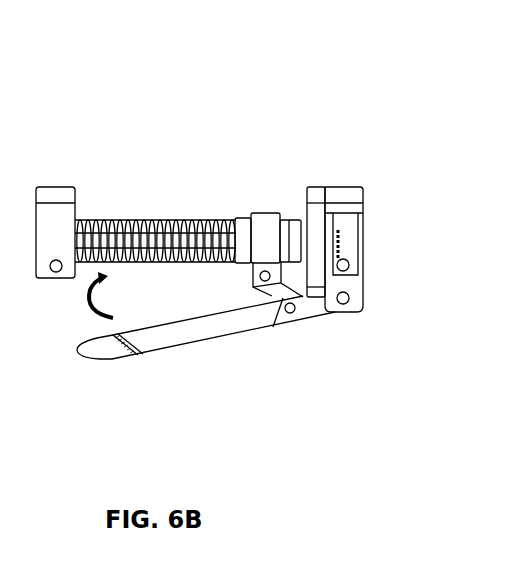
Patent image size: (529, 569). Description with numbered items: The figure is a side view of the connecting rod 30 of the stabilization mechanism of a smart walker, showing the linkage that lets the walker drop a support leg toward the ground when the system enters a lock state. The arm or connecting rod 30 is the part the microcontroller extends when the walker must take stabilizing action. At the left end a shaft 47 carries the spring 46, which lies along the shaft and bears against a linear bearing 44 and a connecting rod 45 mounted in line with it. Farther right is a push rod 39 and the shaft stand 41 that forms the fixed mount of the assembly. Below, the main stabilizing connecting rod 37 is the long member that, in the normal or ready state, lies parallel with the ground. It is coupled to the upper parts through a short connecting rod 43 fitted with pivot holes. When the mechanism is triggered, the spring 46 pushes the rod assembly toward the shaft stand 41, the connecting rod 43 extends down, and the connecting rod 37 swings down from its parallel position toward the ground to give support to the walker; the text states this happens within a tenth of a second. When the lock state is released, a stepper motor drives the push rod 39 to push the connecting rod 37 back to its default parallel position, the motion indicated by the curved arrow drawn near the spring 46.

The connecting rod 30 is at (162, 115).
The main stabilizing connecting rod 37 is at (151, 350).
The push rod 39 is at (314, 186).
The shaft stand 41 is at (357, 239).
The connecting rod 43 is at (279, 302).
The linear bearing 44 is at (288, 216).
The connecting rod 45 is at (251, 210).
The spring 46 is at (173, 220).
The shaft 47 is at (115, 230).